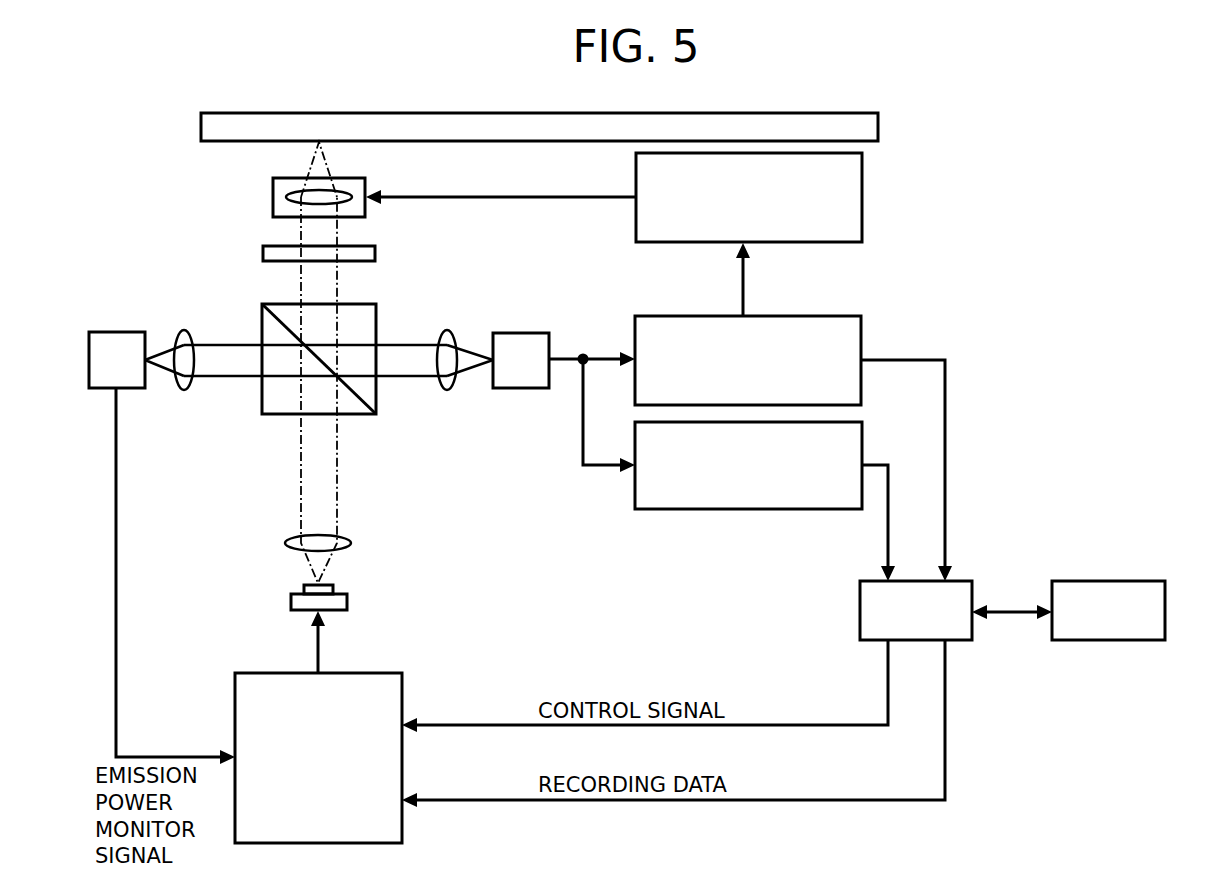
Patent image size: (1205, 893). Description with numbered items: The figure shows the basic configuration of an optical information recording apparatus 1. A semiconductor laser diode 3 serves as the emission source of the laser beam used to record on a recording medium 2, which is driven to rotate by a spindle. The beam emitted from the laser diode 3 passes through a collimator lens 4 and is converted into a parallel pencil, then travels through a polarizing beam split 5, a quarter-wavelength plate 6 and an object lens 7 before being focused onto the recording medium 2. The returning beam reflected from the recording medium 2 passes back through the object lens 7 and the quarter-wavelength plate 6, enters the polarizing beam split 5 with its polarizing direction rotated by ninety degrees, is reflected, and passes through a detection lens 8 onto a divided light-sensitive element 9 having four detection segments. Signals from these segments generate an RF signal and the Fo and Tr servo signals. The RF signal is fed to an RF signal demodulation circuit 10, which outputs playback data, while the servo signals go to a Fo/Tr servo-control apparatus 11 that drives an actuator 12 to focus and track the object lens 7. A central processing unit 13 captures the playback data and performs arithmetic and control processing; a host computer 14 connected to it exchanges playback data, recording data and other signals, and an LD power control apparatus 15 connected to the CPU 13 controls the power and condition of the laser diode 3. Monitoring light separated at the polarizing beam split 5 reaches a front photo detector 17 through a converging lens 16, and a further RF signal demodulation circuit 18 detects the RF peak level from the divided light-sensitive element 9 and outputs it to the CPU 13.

The optical information recording apparatus 1 is at (1029, 380).
The recording medium 2 is at (878, 127).
The semiconductor laser diode (LD) 3 is at (348, 601).
The collimator lens 4 is at (352, 543).
The polarizing beam split 5 is at (378, 398).
The quarter-wavelength plate 6 is at (260, 253).
The object lens 7 is at (352, 201).
The detection lens 8 is at (448, 330).
The divided light-sensitive element 9 is at (521, 333).
The RF signal demodulation circuit 10 is at (821, 510).
The Fo/Tr servo-control apparatus 11 is at (862, 195).
The actuator 12 is at (270, 195).
The central processing unit (CPU) 13 is at (960, 641).
The host computer 14 is at (1145, 641).
The LD power control apparatus 15 is at (234, 712).
The converging lens 16 is at (183, 330).
The front photo detector (PD) 17 is at (113, 331).
The RF signal demodulation circuit 18 is at (826, 316).